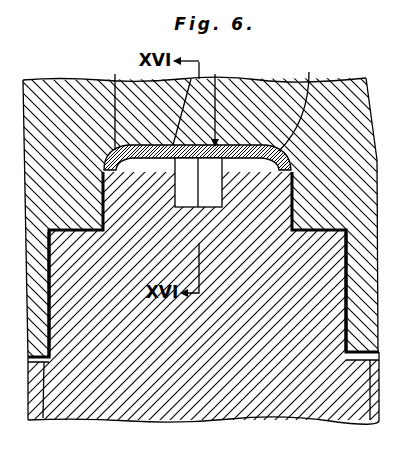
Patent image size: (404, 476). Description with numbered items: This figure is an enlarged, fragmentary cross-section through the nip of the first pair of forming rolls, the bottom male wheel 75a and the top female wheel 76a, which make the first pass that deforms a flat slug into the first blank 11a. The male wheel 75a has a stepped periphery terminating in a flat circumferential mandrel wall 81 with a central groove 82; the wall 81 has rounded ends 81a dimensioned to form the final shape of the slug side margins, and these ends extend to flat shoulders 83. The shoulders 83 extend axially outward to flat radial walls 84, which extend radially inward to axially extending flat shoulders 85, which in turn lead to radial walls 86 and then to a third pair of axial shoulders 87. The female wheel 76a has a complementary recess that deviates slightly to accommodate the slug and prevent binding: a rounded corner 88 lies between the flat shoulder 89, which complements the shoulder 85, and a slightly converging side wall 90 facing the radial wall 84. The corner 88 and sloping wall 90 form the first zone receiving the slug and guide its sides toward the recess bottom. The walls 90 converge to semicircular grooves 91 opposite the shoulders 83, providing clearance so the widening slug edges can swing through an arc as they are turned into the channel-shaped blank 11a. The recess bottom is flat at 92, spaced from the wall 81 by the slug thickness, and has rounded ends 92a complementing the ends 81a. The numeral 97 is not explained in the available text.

The bottom male wheel 75a is at (178, 414).
The top female wheel 76a is at (233, 87).
The first blank 11a is at (212, 100).
The mandrel wall 81 is at (152, 161).
The rounded ends 81a is at (120, 168).
The central groove 82 is at (206, 209).
The flat shoulders 83 is at (116, 170).
The flat radial walls 84 is at (117, 232).
The flat shoulders 85 is at (83, 233).
The radial walls 86 is at (52, 336).
The third pair of axial shoulders 87 is at (43, 419).
The rounded corner 88 is at (101, 216).
The flat shoulder 89 is at (300, 226).
The converging side wall 90 is at (101, 198).
The semicircular grooves 91 is at (99, 166).
The flat bottom 92 is at (180, 103).
The rounded ends 92a is at (200, 101).
The ring 97 is at (396, 230).